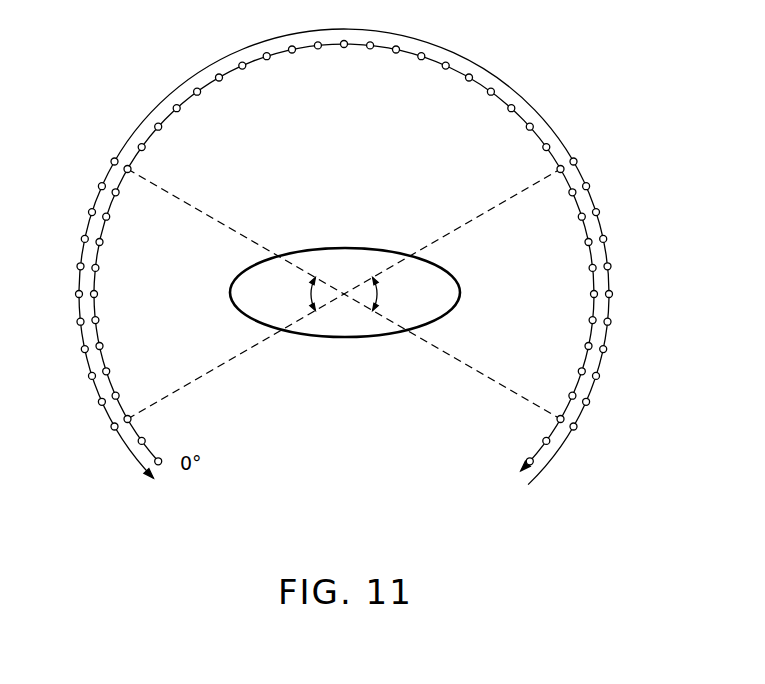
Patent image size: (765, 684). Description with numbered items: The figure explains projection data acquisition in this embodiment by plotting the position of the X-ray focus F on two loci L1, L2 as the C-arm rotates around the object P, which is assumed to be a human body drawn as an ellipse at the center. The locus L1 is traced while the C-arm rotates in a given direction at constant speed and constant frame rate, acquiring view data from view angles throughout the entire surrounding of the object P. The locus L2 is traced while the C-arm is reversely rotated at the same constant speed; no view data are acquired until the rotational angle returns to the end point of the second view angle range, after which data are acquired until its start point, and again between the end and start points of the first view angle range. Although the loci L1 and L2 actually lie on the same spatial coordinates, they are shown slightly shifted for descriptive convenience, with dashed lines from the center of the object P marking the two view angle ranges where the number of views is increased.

The locus L1 is at (454, 69).
The locus L2 is at (472, 62).
The X-ray focus F is at (84, 239).
The object P is at (344, 338).